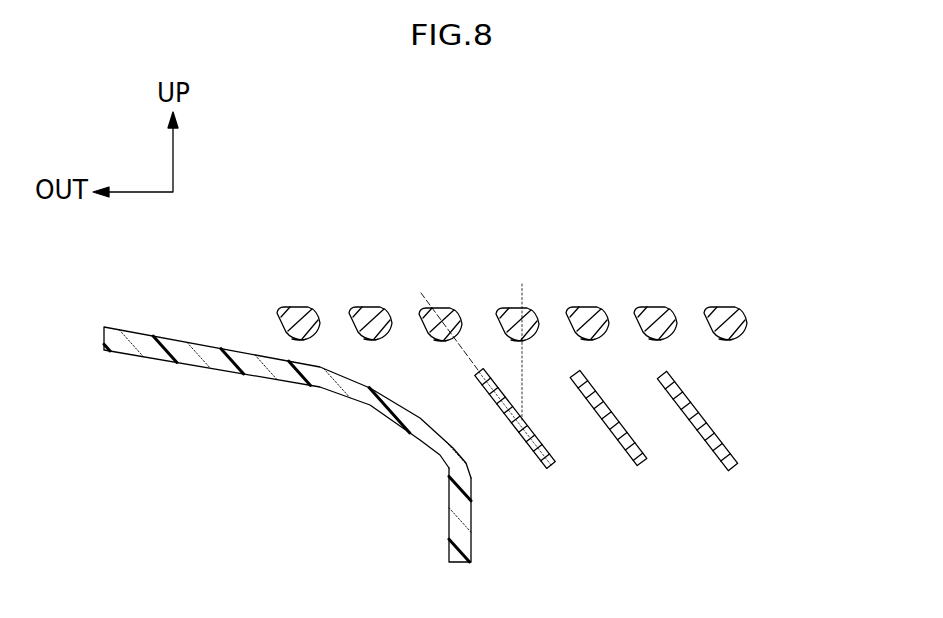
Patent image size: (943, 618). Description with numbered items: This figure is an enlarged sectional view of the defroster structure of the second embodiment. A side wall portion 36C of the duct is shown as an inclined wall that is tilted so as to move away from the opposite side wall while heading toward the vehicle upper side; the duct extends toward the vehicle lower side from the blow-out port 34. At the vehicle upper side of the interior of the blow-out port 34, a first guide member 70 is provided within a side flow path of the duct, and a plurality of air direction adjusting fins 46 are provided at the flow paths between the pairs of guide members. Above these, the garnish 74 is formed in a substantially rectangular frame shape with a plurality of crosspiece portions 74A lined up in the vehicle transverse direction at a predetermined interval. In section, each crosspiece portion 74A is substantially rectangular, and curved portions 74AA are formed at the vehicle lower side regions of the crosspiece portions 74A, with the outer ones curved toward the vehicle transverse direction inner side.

The blow-out port 34 is at (472, 499).
The side wall portion 36C is at (448, 538).
The air direction adjusting fins 46 is at (641, 464).
The first guide members 70 is at (551, 468).
The garnish 74 is at (764, 280).
The crosspiece portions 74A is at (368, 306).
The curved portions 74AA is at (447, 342).